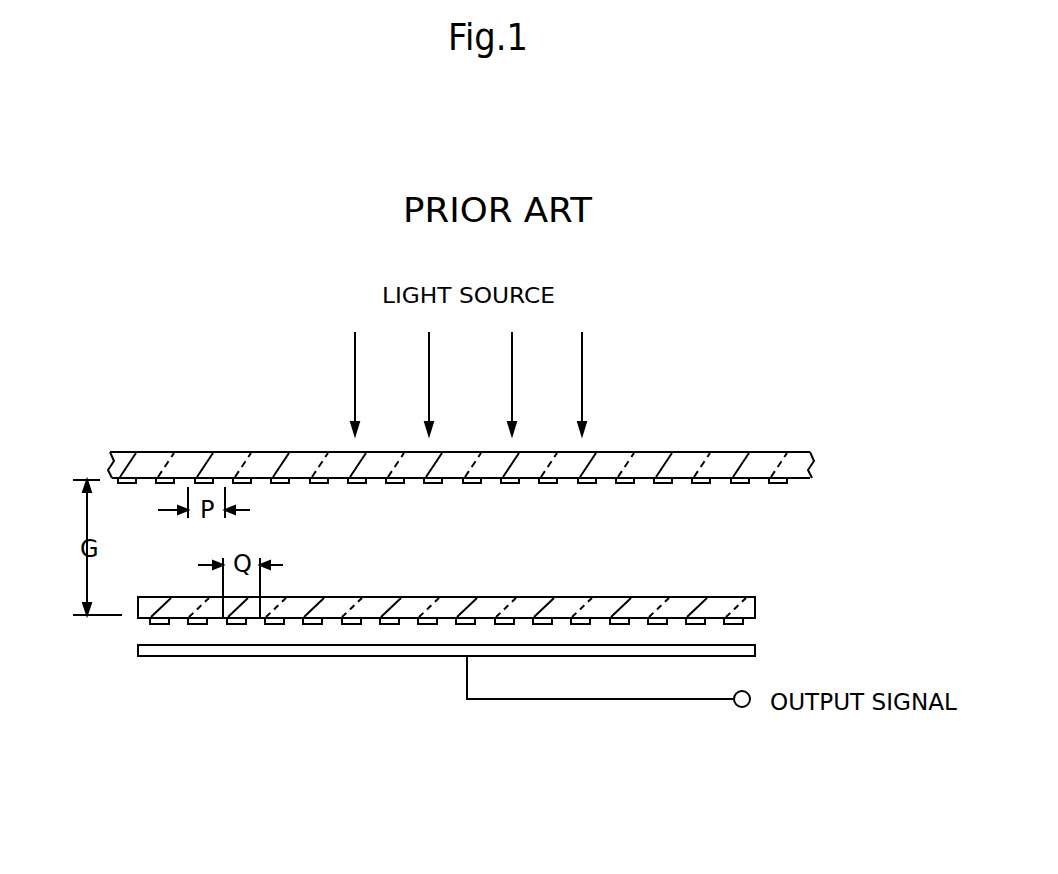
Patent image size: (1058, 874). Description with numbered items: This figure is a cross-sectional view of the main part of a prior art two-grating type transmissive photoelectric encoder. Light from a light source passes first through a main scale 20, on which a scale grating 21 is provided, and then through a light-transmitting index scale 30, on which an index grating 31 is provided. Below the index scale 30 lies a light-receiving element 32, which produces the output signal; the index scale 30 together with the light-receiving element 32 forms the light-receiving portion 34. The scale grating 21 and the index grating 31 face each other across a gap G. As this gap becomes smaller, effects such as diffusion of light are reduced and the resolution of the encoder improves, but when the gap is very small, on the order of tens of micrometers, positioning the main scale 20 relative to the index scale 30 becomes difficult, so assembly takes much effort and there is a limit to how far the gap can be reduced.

The main scale 20 is at (622, 455).
The scale grating 21 is at (580, 485).
The index scale 30 is at (417, 598).
The index grating 31 is at (350, 619).
The light-receiving element 32 is at (513, 651).
The light-receiving portion 34 is at (133, 617).